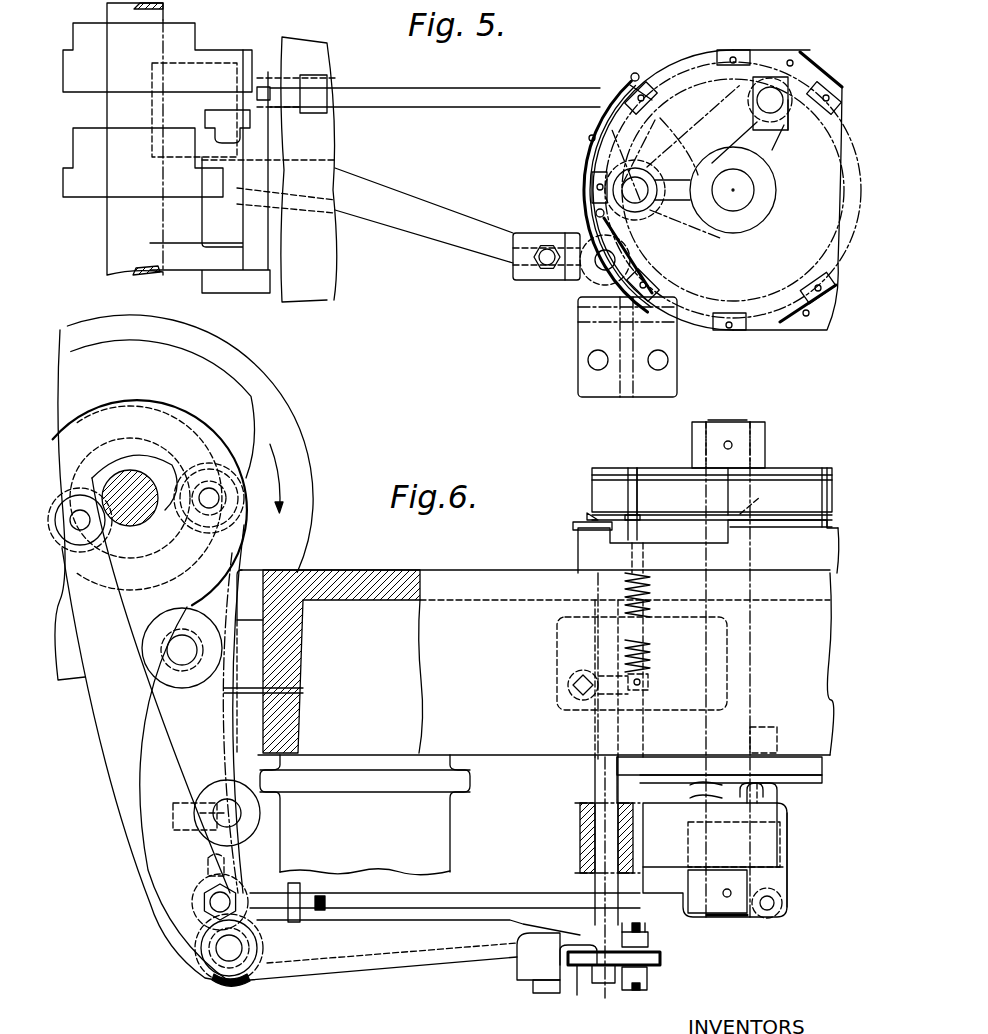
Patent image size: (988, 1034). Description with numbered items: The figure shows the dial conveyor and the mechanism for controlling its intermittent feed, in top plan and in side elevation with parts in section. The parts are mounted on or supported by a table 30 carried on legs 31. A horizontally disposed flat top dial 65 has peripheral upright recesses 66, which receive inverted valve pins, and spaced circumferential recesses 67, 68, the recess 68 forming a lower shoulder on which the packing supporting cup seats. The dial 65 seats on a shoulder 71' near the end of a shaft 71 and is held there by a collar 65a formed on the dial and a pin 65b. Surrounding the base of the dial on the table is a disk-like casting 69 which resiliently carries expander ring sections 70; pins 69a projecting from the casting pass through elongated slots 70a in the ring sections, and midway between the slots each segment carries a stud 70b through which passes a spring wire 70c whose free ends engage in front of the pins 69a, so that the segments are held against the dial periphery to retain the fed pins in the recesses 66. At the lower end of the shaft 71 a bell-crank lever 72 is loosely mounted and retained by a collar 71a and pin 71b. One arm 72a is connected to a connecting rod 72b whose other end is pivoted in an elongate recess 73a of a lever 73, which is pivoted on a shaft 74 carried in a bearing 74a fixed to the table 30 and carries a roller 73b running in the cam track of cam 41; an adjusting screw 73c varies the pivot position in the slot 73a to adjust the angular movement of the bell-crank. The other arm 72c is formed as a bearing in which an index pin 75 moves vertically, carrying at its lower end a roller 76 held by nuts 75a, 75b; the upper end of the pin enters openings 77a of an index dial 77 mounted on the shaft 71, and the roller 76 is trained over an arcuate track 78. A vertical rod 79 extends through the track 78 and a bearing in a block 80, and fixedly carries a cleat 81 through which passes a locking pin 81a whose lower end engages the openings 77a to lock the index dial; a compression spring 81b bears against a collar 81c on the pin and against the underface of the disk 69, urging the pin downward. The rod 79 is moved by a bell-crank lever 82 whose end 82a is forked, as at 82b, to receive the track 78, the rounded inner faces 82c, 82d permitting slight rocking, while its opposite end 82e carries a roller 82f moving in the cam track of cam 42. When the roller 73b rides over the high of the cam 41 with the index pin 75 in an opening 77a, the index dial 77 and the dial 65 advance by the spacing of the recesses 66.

In FIG. 6, the table 30 is at (371, 570).
In FIG. 6, the legs 31 is at (365, 815).
In FIG. 5, the cam 41 is at (80, 92).
In FIG. 6, the cam 41 is at (218, 435).
In FIG. 5, the cam 42 is at (82, 196).
In FIG. 6, the cam 42 is at (146, 498).
In FIG. 5, the dial 65 is at (727, 190).
In FIG. 6, the dial 65 is at (636, 462).
In FIG. 5, the collar 65a is at (753, 207).
In FIG. 6, the collar 65a is at (766, 448).
In FIG. 6, the pin 65b is at (733, 447).
In FIG. 5, the recesses 66 is at (736, 52).
In FIG. 6, the recesses 66 is at (730, 468).
In FIG. 6, the circumferential recess 67 is at (592, 474).
In FIG. 6, the circumferential recess 68 is at (592, 512).
In FIG. 6, the disk-like casting 69 is at (708, 640).
In FIG. 5, the pins 69a is at (650, 76).
In FIG. 6, the pins 69a is at (586, 516).
In FIG. 5, the expander ring sections 70 is at (585, 160).
In FIG. 6, the expander ring sections 70 is at (575, 530).
In FIG. 5, the elongated slots 70a is at (633, 74).
In FIG. 5, the stud 70b is at (589, 137).
In FIG. 5, the spring wire 70c is at (590, 178).
In FIG. 5, the shaft 71 is at (772, 186).
In FIG. 6, the shaft 71 is at (745, 422).
In FIG. 6, the shoulder 71' is at (768, 500).
In FIG. 6, the collar 71a is at (742, 905).
In FIG. 6, the pin 71b is at (727, 898).
In FIG. 5, the bell-crank lever 72 is at (669, 224).
In FIG. 6, the bell-crank lever 72 is at (715, 850).
In FIG. 5, the arm 72a is at (788, 132).
In FIG. 6, the arm 72a is at (787, 845).
In FIG. 5, the connecting rod 72b is at (533, 100).
In FIG. 6, the connecting rod 72b is at (446, 903).
In FIG. 5, the arm 72c is at (657, 168).
In FIG. 6, the arm 72c is at (683, 880).
In FIG. 6, the lever 73 is at (161, 753).
In FIG. 6, the elongate recess 73a is at (208, 868).
In FIG. 6, the roller 73b is at (232, 527).
In FIG. 6, the adjusting screw 73c is at (231, 990).
In FIG. 6, the shaft 74 is at (245, 672).
In FIG. 6, the bearing 74a is at (285, 691).
In FIG. 6, the index pin 75 is at (615, 778).
In FIG. 6, the nut 75a is at (649, 938).
In FIG. 6, the nut 75b is at (618, 990).
In FIG. 5, the roller 76 is at (640, 214).
In FIG. 6, the roller 76 is at (660, 958).
In FIG. 6, the index dial 77 is at (657, 757).
In FIG. 6, the openings 77a is at (763, 752).
In FIG. 5, the arcuate track 78 is at (662, 272).
In FIG. 6, the arcuate track 78 is at (600, 983).
In FIG. 5, the vertical rod 79 is at (600, 270).
In FIG. 6, the vertical rod 79 is at (600, 882).
In FIG. 6, the bearing block 80 is at (578, 735).
In FIG. 6, the cleat 81 is at (592, 680).
In FIG. 6, the locking pin 81a is at (640, 630).
In FIG. 6, the compression spring 81b is at (650, 658).
In FIG. 6, the collar 81c is at (648, 684).
In FIG. 6, the bell-crank lever 82 is at (415, 950).
In FIG. 6, the end 82a is at (528, 955).
In FIG. 6, the fork 82b is at (528, 993).
In FIG. 6, the inner face 82c is at (572, 953).
In FIG. 6, the inner face 82d is at (577, 995).
In FIG. 6, the end 82e is at (139, 685).
In FIG. 6, the roller 82f is at (92, 478).